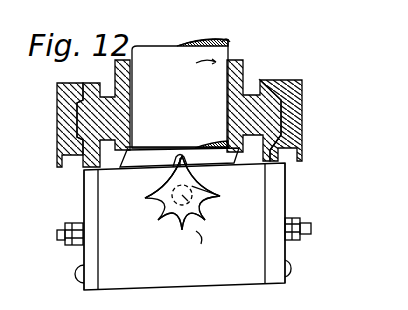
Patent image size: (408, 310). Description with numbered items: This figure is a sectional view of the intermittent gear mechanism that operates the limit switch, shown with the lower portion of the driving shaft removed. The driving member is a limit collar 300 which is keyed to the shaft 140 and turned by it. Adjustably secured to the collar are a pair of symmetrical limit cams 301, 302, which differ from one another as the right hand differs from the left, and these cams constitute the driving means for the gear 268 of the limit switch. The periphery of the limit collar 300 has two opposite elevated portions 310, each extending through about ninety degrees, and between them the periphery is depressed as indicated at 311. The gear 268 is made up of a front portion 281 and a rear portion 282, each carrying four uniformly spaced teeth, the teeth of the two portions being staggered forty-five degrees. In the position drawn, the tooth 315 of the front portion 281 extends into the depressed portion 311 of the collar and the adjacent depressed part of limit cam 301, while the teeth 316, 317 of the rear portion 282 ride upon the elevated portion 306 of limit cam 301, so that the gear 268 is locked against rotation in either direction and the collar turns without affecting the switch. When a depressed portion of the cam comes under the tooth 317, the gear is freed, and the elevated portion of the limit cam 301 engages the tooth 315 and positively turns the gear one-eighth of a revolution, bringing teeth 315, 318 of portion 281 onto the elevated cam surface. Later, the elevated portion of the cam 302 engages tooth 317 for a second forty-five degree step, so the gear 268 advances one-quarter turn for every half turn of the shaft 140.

The shaft 140 is at (231, 63).
The limit collar 300 is at (304, 79).
The limit cam 301 is at (292, 105).
The limit cam 302 is at (64, 97).
The elevated portion of the limit cam 306 is at (304, 160).
The elevated portion of the limit collar 310 is at (290, 165).
The depressed portion of the limit collar 311 is at (95, 172).
The gear tooth 315 is at (163, 168).
The gear tooth 316 is at (166, 174).
The gear tooth 317 is at (204, 173).
The gear tooth 318 is at (220, 192).
The rear portion of the gear 282 is at (212, 218).
The front portion of the gear 281 is at (183, 230).
The gear 268 is at (197, 232).